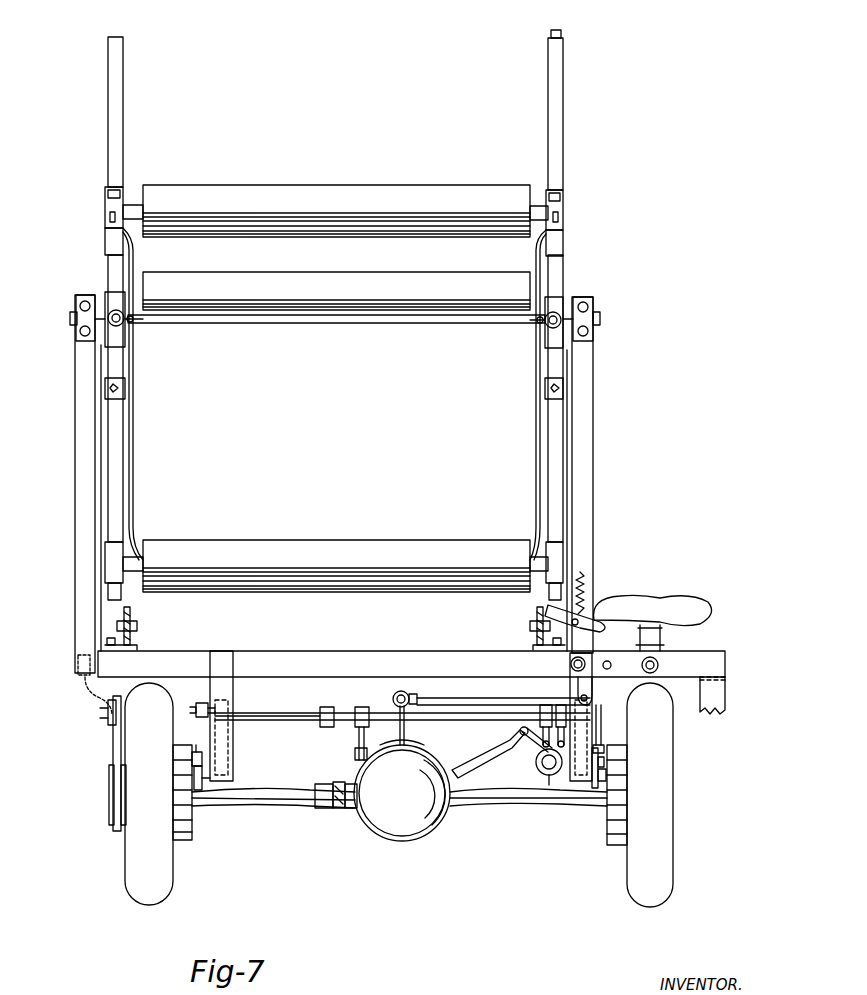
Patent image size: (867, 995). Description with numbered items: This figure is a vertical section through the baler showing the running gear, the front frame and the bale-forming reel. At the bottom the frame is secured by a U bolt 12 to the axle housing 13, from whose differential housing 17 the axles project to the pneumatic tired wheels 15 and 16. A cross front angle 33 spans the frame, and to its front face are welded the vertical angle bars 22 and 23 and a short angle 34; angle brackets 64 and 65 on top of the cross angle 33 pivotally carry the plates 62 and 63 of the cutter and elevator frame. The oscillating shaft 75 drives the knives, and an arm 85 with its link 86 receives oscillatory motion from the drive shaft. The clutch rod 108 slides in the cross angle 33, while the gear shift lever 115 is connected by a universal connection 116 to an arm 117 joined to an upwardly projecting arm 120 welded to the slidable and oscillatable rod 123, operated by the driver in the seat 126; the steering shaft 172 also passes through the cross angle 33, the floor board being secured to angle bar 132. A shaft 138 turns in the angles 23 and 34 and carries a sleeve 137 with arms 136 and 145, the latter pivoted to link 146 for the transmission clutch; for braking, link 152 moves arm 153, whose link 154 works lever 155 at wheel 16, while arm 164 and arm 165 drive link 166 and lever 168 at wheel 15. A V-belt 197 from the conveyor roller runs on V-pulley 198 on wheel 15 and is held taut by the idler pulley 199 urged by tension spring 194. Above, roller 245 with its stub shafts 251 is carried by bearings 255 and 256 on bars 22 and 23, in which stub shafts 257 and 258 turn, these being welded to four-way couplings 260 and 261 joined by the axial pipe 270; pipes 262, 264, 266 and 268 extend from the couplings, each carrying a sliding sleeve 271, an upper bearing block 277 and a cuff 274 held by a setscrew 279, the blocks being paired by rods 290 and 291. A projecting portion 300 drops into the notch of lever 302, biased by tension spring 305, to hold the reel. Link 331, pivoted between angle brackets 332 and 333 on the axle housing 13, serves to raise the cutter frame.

The U bolt 12 is at (222, 818).
The axle housing 13 is at (495, 808).
The pneumatic tired wheel 15 is at (126, 878).
The pneumatic tired wheel 16 is at (672, 878).
The differential housing 17 is at (420, 838).
The vertical angle bar 22 is at (78, 409).
The vertical angle bar 23 is at (593, 441).
The cross front angle 33 is at (334, 657).
The short angle 34 is at (232, 691).
The plate 62 is at (131, 612).
The plate 63 is at (537, 614).
The angle bracket 64 is at (136, 646).
The angle bracket 65 is at (534, 644).
The oscillating shaft 75 is at (547, 774).
The arm 85 is at (533, 746).
The link 86 is at (482, 762).
The rod 108 is at (608, 660).
The gear shift lever 115 is at (399, 729).
The universal connection 116 is at (395, 694).
The arm 117 is at (462, 700).
The upwardly projecting arm 120 is at (593, 693).
The slidable and oscillatable rod 123 is at (570, 665).
The seat 126 is at (660, 598).
The angle bar 132 is at (726, 691).
The arm 136 is at (540, 708).
The sleeve 137 is at (462, 721).
The shaft 138 is at (286, 721).
The downwardly projecting arm 145 is at (356, 713).
The link 146 is at (354, 752).
The link 152 is at (601, 747).
The arm 153 is at (600, 756).
The link 154 is at (604, 762).
The lever 155 is at (606, 776).
The arm 164 is at (556, 704).
The arm 165 is at (201, 704).
The link 166 is at (191, 760).
The lever 168 is at (193, 776).
The steering shaft 172 is at (658, 665).
The tension spring 194 is at (85, 686).
The V-belt 197 is at (112, 742).
The V-pulley 198 is at (108, 790).
The idler pulley 199 is at (107, 715).
The roller 245 is at (340, 193).
The stub shaft 251 is at (134, 204).
The bearing 255 is at (80, 308).
The bearing 256 is at (592, 312).
The stub shaft 257 is at (71, 320).
The stub shaft 258 is at (601, 321).
The four-way coupling 260 is at (120, 332).
The four-way coupling 261 is at (550, 339).
The pipe 262 is at (118, 462).
The pipe 264 is at (118, 100).
The pipe 266 is at (548, 476).
The pipe 268 is at (557, 88).
The axially disposed pipe 270 is at (357, 324).
The sleeve 271 is at (106, 193).
The cuff 274 is at (108, 243).
The upper bearing block 277 is at (110, 217).
The setscrew 279 is at (119, 390).
The rod 290 is at (134, 430).
The rod 291 is at (135, 317).
The projecting portion 300 is at (562, 32).
The lever 302 is at (602, 623).
The tension spring 305 is at (586, 592).
The link 331 is at (338, 784).
The angle bracket 332 is at (348, 810).
The angle bracket 333 is at (322, 810).